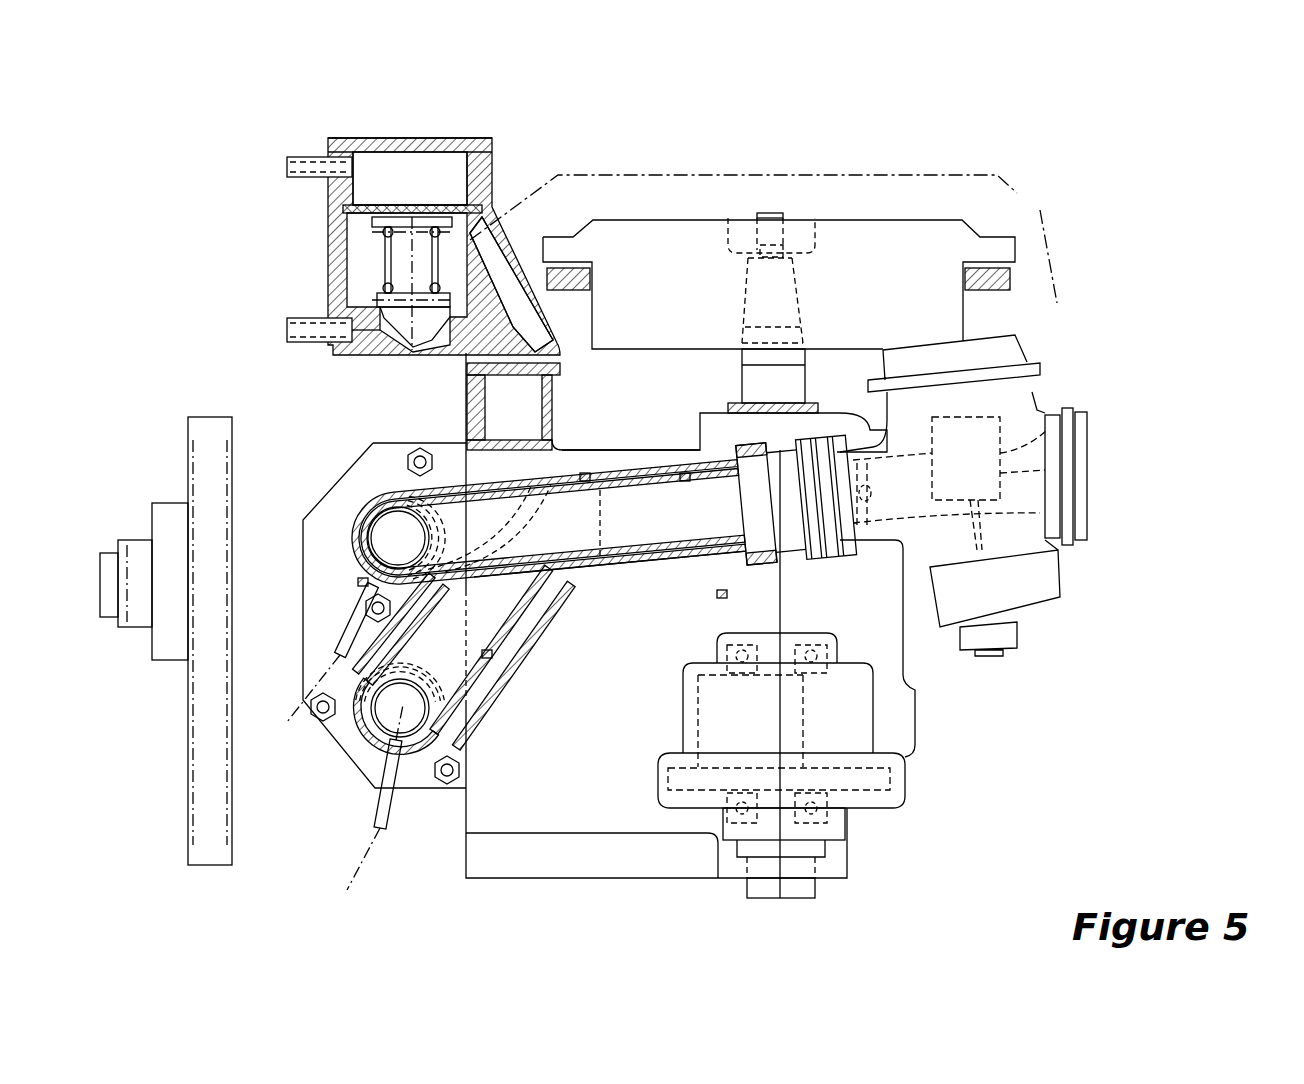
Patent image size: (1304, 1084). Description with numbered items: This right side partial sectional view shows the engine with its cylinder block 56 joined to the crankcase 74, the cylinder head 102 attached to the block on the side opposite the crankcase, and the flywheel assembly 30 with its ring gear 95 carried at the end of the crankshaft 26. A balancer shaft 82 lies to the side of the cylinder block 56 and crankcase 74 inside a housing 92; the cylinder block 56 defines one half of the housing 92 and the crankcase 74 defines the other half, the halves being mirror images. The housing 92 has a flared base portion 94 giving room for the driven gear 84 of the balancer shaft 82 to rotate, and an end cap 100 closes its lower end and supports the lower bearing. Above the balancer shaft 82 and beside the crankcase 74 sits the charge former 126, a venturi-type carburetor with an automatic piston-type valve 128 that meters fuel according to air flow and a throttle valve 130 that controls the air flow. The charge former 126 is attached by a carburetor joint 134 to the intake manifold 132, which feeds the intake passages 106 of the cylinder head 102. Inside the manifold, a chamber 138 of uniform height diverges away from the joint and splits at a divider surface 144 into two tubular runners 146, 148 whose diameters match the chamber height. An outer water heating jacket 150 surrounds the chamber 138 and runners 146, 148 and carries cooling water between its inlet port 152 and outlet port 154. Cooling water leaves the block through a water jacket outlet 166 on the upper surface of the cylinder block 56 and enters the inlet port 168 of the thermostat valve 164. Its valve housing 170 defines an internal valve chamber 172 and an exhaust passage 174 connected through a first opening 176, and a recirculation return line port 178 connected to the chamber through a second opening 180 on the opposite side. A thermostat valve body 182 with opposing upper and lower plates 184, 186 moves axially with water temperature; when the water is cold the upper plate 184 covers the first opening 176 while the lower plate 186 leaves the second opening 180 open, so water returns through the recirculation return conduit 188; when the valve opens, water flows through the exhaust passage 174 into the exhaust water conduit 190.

The crankshaft 26 is at (728, 382).
The flywheel assembly 30 is at (1010, 230).
The cylinder block 56 is at (465, 830).
The crankcase 74 is at (918, 727).
The balancer shaft 82 is at (697, 717).
The driven gear 84 is at (870, 790).
The housing 92 is at (870, 702).
The flared base portion 94 is at (657, 783).
The ring gear 95 is at (997, 292).
The end cap 100 is at (833, 833).
The cylinder head 102 is at (347, 470).
The intake passage 106 is at (393, 535).
The charge former 126 is at (1062, 392).
The piston-type valve 128 is at (1060, 473).
The throttle valve 130 is at (870, 517).
The intake manifold 132 is at (621, 450).
The carburetor joint 134 is at (793, 563).
The chamber 138 is at (650, 527).
The divider surface 144 is at (607, 523).
The runner 146 is at (577, 567).
The runner 148 is at (502, 658).
The water heating jacket 150 is at (585, 478).
The inlet port 152 is at (307, 700).
The outlet port 154 is at (357, 820).
The thermostat valve 164 is at (492, 110).
The water jacket outlet 166 is at (500, 411).
The inlet port 168 is at (528, 338).
The valve housing 170 is at (423, 137).
The valve chamber 172 is at (495, 215).
The exhaust passage 174 is at (388, 152).
The first opening 176 is at (443, 182).
The recirculation return line port 178 is at (367, 340).
The second opening 180 is at (417, 325).
The thermostat valve body 182 is at (387, 253).
The upper valve plate 184 is at (357, 230).
The lower valve plate 186 is at (330, 292).
The recirculation return conduit 188 is at (290, 345).
The exhaust water conduit 190 is at (297, 157).